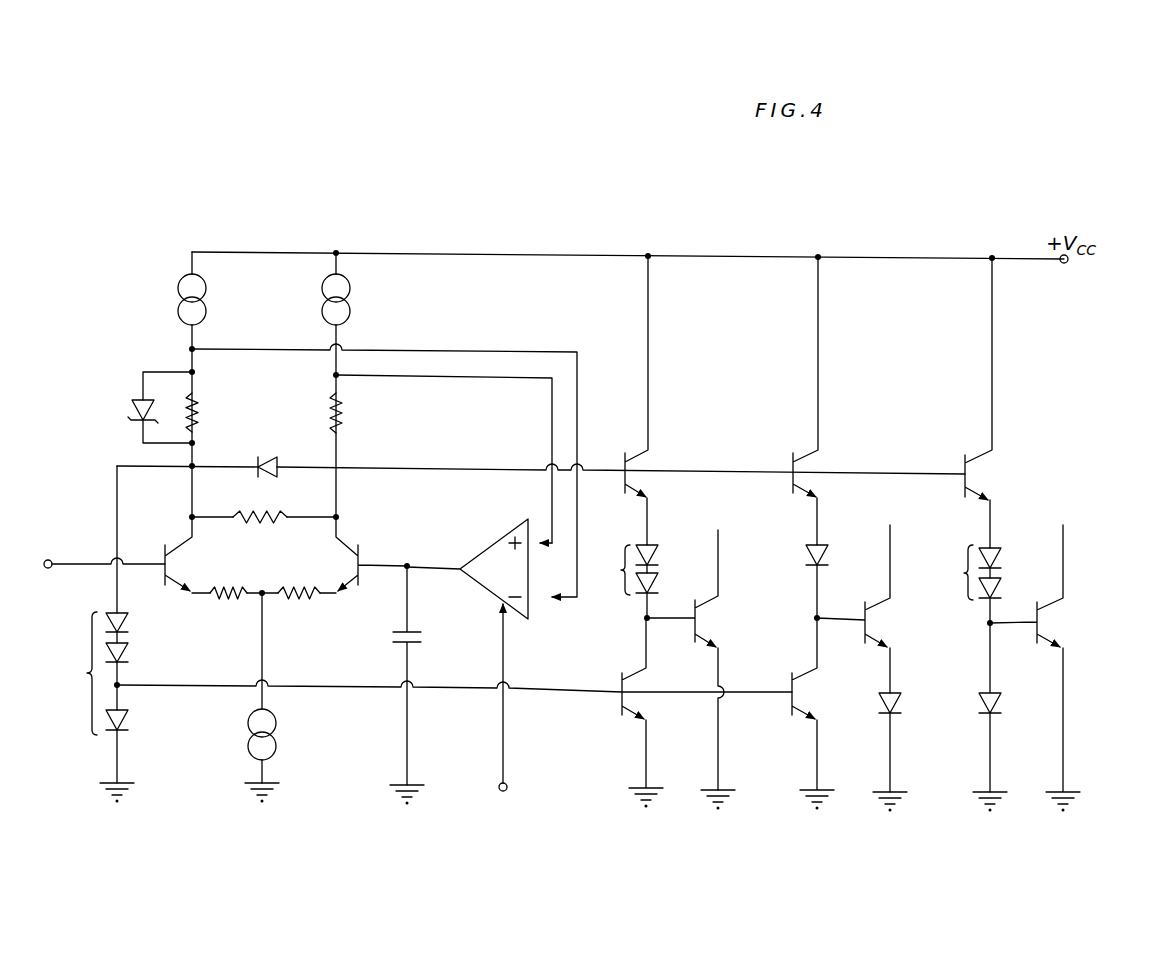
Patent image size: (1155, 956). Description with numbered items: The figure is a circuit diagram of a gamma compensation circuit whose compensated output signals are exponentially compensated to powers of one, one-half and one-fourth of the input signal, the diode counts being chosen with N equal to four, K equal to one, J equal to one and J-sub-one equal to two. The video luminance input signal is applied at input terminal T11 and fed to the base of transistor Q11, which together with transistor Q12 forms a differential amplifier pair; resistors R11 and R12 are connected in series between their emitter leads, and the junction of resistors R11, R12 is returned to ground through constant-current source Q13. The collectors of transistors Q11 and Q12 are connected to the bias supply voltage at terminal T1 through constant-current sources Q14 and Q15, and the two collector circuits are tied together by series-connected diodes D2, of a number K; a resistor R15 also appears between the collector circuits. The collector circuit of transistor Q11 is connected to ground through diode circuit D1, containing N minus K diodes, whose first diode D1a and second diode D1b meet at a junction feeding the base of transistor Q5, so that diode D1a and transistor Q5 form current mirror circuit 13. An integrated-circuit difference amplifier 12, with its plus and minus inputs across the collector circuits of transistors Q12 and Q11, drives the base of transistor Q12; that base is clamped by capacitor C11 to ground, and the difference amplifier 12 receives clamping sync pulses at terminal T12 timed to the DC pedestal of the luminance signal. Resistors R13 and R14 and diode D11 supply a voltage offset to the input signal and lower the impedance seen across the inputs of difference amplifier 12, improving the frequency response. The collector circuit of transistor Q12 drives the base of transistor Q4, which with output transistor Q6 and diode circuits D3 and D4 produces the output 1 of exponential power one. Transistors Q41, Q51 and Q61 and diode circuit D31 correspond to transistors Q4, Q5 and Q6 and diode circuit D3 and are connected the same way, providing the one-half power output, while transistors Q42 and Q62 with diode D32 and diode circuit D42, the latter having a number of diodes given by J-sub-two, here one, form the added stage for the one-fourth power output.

The input terminal T11 is at (44, 569).
The constant-current source Q14 is at (204, 293).
The constant-current source Q15 is at (320, 297).
The diode D11 is at (130, 412).
The resistor R13 is at (197, 407).
The resistor R14 is at (332, 412).
The series connected diodes D2 is at (268, 478).
The resistor R15 is at (254, 530).
The transistor Q11 is at (172, 573).
The transistor Q12 is at (373, 573).
The resistor R11 is at (230, 599).
The resistor R12 is at (297, 600).
The series connected diode circuit D1 is at (116, 707).
The first diode D1a is at (126, 722).
The second diode D1b is at (126, 652).
The constant-current source Q13 is at (275, 738).
The capacitor C11 is at (416, 638).
The difference amplifier 12 is at (490, 593).
The terminal T12 is at (505, 792).
The current mirror circuit 13 is at (456, 764).
The output transistor Q4 is at (620, 486).
The series-connected diode circuit D3 is at (624, 559).
The output transistor Q6 is at (688, 630).
The exponential power of one output 1 is at (712, 523).
The transistor Q5 is at (615, 707).
The transistor Q51 is at (783, 707).
The transistor Q41 is at (786, 492).
The diode circuit D31 is at (808, 556).
The transistor Q61 is at (858, 642).
The series-connected diode circuit D4 is at (898, 704).
The transistor Q42 is at (958, 495).
The diode D32 is at (954, 563).
The transistor Q62 is at (1030, 642).
The diode circuit D42 is at (998, 705).
The terminal T1 is at (1062, 264).